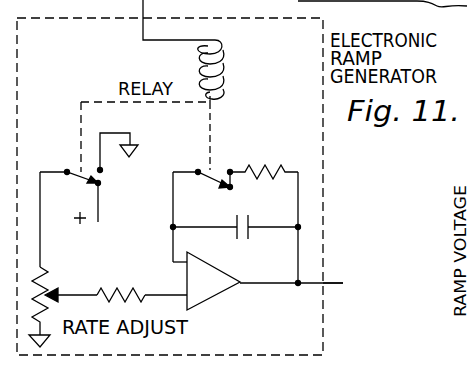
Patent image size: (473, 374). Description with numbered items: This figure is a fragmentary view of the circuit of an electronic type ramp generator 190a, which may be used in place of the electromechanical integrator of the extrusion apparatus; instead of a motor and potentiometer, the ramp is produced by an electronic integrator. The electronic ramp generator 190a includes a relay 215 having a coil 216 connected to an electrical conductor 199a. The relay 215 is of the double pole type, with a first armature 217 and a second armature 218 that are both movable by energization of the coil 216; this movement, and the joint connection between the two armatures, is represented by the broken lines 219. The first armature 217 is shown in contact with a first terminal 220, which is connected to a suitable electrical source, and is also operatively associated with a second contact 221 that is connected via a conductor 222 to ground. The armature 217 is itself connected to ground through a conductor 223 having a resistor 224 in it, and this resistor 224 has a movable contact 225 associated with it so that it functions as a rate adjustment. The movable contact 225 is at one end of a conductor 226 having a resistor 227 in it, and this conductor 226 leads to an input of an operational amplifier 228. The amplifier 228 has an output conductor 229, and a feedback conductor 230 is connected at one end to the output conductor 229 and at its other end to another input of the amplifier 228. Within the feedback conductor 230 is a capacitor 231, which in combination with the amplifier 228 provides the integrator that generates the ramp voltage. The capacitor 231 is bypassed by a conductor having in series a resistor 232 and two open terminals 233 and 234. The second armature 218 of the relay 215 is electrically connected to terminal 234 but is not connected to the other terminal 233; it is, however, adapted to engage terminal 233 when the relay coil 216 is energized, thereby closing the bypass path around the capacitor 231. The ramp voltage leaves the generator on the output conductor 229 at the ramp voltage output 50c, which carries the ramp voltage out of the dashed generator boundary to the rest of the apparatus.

The electrical conductor 199a is at (143, 4).
The relay 215 is at (92, 83).
The coil 216 is at (222, 68).
The first armature 217 is at (73, 170).
The second armature 218 is at (201, 170).
The broken lines 219 is at (208, 117).
The first terminal 220 is at (99, 185).
The second contact 221 is at (102, 171).
The conductor 222 is at (110, 131).
The conductor 223 is at (41, 237).
The resistor 224 is at (42, 264).
The movable contact 225 is at (58, 293).
The conductor 226 is at (172, 295).
The resistor 227 is at (125, 293).
The operational amplifier 228 is at (209, 296).
The output conductor 229 is at (273, 284).
The feedback conductor 230 is at (298, 258).
The capacitor 231 is at (237, 233).
The resistor 232 is at (278, 170).
The open terminal 233 is at (230, 172).
The open terminal 234 is at (199, 175).
The electronic ramp generator 190a is at (334, 160).
The ramp voltage output 50c is at (335, 283).